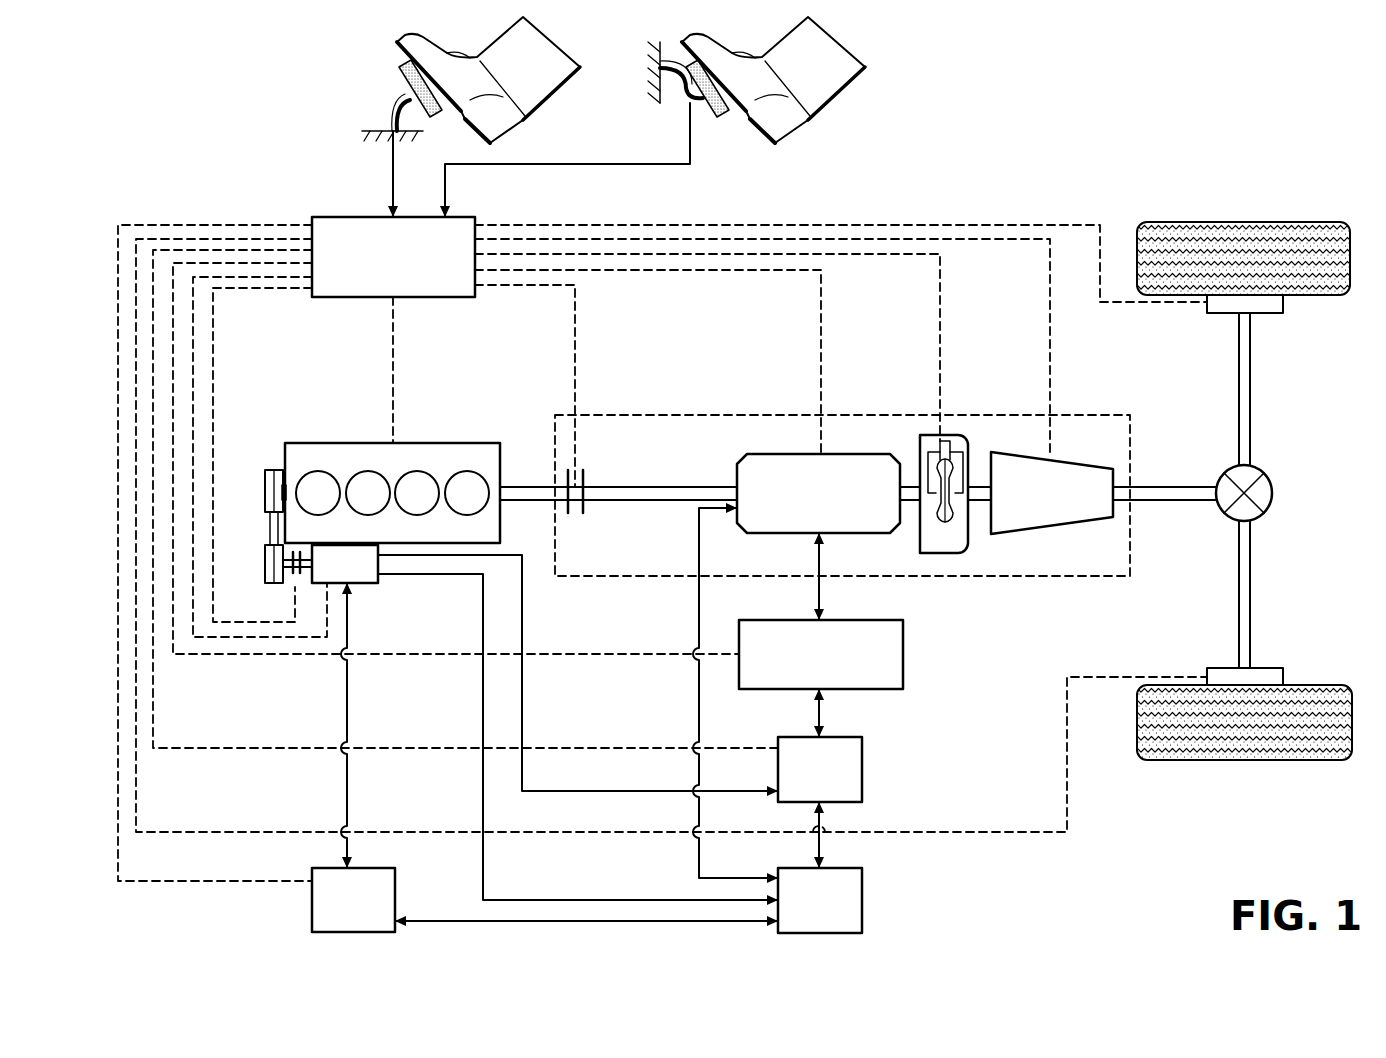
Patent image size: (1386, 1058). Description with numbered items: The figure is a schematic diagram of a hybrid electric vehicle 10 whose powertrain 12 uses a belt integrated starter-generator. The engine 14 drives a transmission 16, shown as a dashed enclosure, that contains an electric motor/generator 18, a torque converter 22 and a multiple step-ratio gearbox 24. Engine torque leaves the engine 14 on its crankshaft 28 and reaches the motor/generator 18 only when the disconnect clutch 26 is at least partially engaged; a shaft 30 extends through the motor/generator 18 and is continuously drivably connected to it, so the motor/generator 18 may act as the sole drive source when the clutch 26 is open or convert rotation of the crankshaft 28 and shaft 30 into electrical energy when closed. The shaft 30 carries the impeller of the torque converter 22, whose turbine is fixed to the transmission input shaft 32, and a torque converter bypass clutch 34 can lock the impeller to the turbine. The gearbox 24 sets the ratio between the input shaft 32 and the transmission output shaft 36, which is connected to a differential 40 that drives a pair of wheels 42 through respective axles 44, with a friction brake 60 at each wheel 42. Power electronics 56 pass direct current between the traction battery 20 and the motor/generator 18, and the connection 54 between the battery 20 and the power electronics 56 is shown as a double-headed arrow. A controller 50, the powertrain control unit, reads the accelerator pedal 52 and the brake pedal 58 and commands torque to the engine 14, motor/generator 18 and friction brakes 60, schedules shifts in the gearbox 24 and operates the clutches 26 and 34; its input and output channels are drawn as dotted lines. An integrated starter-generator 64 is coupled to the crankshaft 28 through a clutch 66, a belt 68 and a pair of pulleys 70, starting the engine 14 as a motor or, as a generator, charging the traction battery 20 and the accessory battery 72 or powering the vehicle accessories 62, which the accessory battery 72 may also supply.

The hybrid electric vehicle 10 is at (947, 124).
The powertrain 12 is at (447, 698).
The engine 14 is at (345, 443).
The transmission 16 is at (895, 415).
The electric motor/generator 18 is at (784, 453).
The traction battery 20 is at (862, 770).
The torque converter 22 is at (940, 553).
The gearbox 24 is at (1052, 534).
The disconnect clutch 26 is at (585, 477).
The crankshaft 28 is at (537, 487).
The M/G shaft 30 is at (686, 487).
The transmission input shaft 32 is at (977, 478).
The torque converter bypass clutch 34 is at (940, 436).
The transmission output shaft 36 is at (1155, 486).
The differential 40 is at (1272, 493).
The wheels 42 is at (1247, 222).
The axles 44 is at (1251, 382).
The controller 50 is at (350, 217).
The accelerator pedal 52 is at (402, 82).
The battery to power electronics connection 54 is at (812, 714).
The power electronics 56 is at (903, 653).
The brake pedal 58 is at (728, 114).
The friction brakes 60 is at (1283, 303).
The vehicle accessories 62 is at (862, 900).
The integrated starter-generator 64 is at (362, 583).
The clutch 66 is at (292, 583).
The belt 68 is at (265, 538).
The pulleys 70 is at (265, 492).
The accessory battery 72 is at (395, 897).